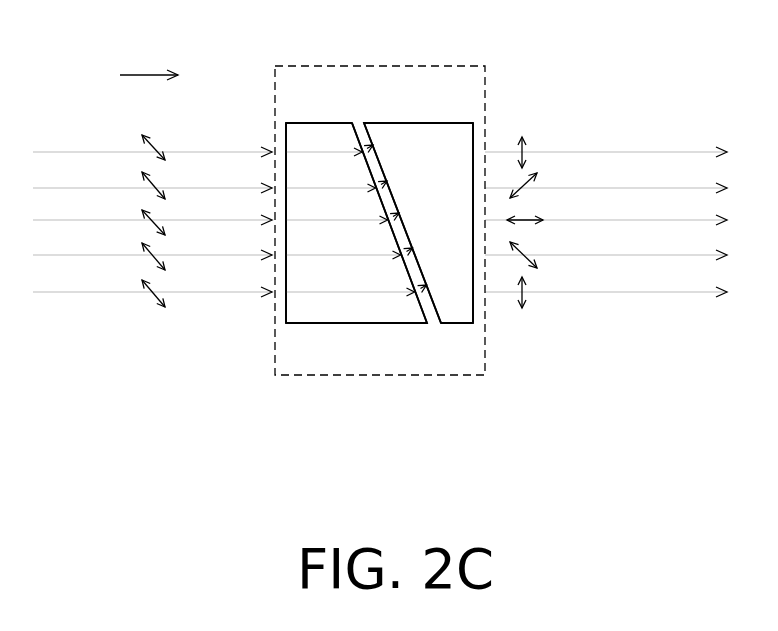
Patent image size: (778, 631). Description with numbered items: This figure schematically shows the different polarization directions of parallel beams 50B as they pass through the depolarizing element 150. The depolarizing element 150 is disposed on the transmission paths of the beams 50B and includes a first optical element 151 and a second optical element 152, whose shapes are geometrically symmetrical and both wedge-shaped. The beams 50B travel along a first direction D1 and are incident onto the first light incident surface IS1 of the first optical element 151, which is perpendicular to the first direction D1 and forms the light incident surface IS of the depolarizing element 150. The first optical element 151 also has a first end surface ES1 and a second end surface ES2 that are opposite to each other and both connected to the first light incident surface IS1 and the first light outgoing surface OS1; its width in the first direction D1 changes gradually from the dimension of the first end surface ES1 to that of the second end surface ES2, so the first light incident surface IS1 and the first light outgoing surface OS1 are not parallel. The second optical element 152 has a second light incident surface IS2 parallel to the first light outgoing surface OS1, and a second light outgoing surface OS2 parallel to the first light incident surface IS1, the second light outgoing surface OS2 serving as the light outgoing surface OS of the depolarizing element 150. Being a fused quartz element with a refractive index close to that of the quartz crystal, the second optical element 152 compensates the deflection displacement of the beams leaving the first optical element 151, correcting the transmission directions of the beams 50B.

The beams 50B is at (65, 255).
The first direction D1 is at (149, 56).
The depolarizing element 150 is at (487, 90).
The first optical element 151 is at (320, 130).
The second optical element 152 is at (432, 130).
The first end surface ES1 is at (305, 119).
The second end surface ES2 is at (346, 326).
The first light incident surface IS1 is at (282, 301).
The light incident surface IS is at (221, 252).
The second light incident surface IS2 is at (434, 311).
The first light outgoing surface OS1 is at (356, 119).
The second light outgoing surface OS2 is at (477, 312).
The light outgoing surface OS is at (549, 254).